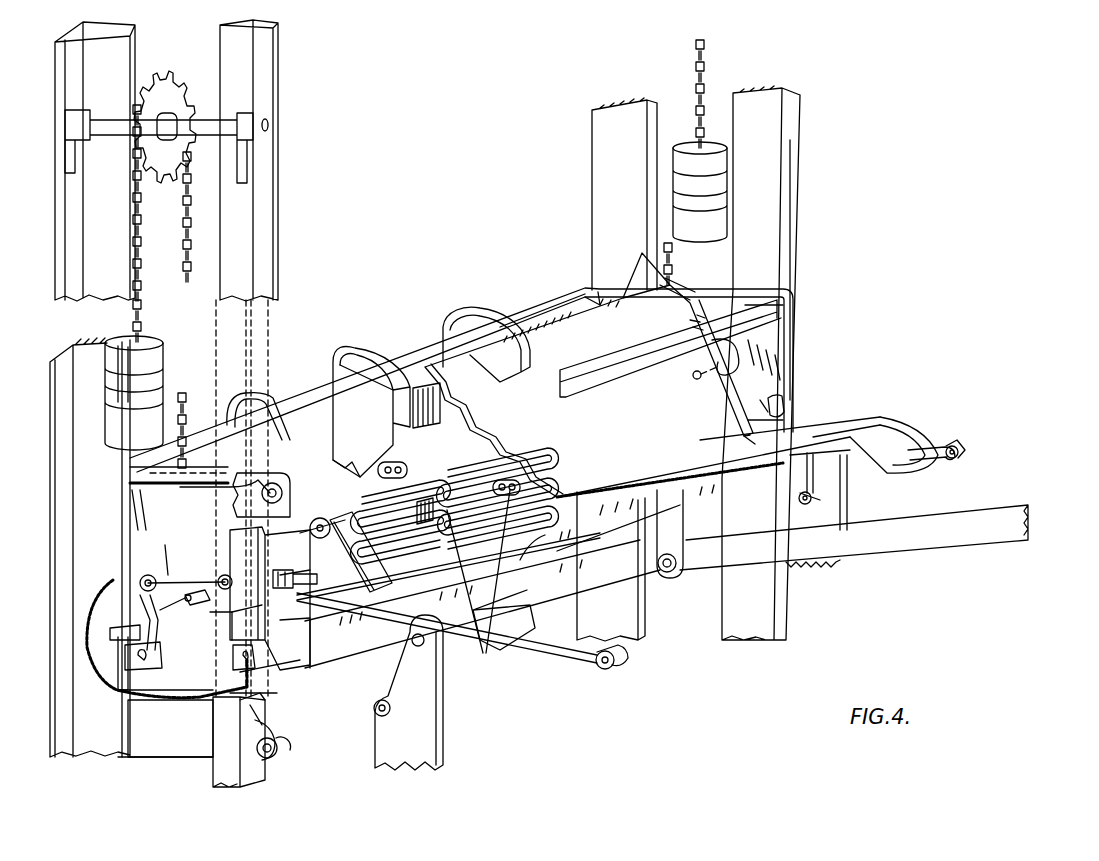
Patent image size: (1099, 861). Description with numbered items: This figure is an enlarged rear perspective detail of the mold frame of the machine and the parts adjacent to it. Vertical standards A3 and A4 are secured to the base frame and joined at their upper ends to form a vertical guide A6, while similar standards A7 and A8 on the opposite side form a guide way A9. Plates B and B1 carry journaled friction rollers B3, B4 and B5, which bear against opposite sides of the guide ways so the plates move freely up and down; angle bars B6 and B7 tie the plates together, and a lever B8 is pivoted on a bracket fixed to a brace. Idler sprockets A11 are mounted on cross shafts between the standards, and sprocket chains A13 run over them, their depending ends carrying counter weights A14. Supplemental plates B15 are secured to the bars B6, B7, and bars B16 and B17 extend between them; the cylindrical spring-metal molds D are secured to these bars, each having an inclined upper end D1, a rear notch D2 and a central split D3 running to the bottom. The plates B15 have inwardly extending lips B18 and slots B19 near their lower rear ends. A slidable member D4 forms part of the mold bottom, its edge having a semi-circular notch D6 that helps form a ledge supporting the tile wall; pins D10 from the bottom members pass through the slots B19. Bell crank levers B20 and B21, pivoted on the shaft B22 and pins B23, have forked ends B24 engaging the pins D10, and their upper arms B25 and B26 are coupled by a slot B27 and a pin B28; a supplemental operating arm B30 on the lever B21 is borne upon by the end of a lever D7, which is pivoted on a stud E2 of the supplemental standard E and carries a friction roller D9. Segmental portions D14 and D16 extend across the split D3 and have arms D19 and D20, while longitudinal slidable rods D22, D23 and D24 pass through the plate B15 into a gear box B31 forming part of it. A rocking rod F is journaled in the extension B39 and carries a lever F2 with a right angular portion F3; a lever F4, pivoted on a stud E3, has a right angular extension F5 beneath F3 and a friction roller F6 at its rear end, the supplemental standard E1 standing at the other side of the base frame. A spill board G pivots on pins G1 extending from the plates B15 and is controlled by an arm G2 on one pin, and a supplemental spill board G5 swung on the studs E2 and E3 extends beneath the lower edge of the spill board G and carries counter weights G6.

The vertical standard A3 is at (590, 232).
The vertical standard A4 is at (780, 230).
The vertical guide A6 is at (793, 213).
The standard A7 is at (230, 765).
The standard A8 is at (82, 753).
The guide way A9 is at (262, 248).
The idler sprocket A11 is at (153, 153).
The sprocket chain A13 is at (182, 392).
The counter weight A14 is at (118, 423).
The plate B is at (778, 340).
The plate B1 is at (177, 757).
The friction roller B3 is at (232, 615).
The friction roller B4 is at (795, 300).
The friction roller B5 is at (812, 500).
The angle bar B6 is at (557, 308).
The angle bar B7 is at (790, 310).
The lever B8 is at (854, 537).
The supplemental plate B15 is at (547, 320).
The bar B16 is at (528, 335).
The bar B17 is at (670, 507).
The inwardly extending lip B18 is at (330, 665).
The slot B19 is at (157, 670).
The bell crank lever B20 is at (140, 603).
The bell crank lever B21 is at (182, 605).
The shaft B22 is at (143, 598).
The pin B23 is at (218, 566).
The forked end B24 is at (127, 653).
The upper arm B25 is at (166, 550).
The upper arm B26 is at (218, 580).
The slot B27 is at (125, 633).
The outwardly extending pin B28 is at (170, 624).
The supplemental operating arm B30 is at (790, 406).
The gear box B31 is at (233, 632).
The extension B39 is at (270, 598).
The mold D is at (362, 370).
The inclined upper end D1 is at (340, 357).
The rear notch D2 is at (413, 380).
The central split D3 is at (400, 430).
The slidable member D4 is at (365, 625).
The semi-circular notch D6 is at (578, 567).
The lever D7 is at (920, 445).
The friction roller D9 is at (960, 446).
The pin D10 is at (133, 670).
The segmental portion D14 is at (498, 498).
The segmental portion D16 is at (500, 545).
The arm D19 is at (570, 534).
The arm D20 is at (535, 545).
The longitudinal slidable rod D22 is at (373, 490).
The longitudinal slidable rod D23 is at (448, 570).
The longitudinal slidable rod D24 is at (484, 650).
The supplemental standard E is at (850, 518).
The supplemental standard E1 is at (412, 723).
The stud E2 is at (815, 468).
The stud E3 is at (417, 647).
The rocking rod F is at (361, 552).
The lever F2 is at (316, 518).
The right angular portion F3 is at (330, 625).
The lever F4 is at (575, 655).
The right angular extension F5 is at (285, 592).
The friction roller F6 is at (612, 672).
The spill board G is at (637, 375).
The pin G1 is at (699, 380).
The arm G2 is at (680, 285).
The supplemental spill board G5 is at (855, 420).
The counter weight G6 is at (885, 440).